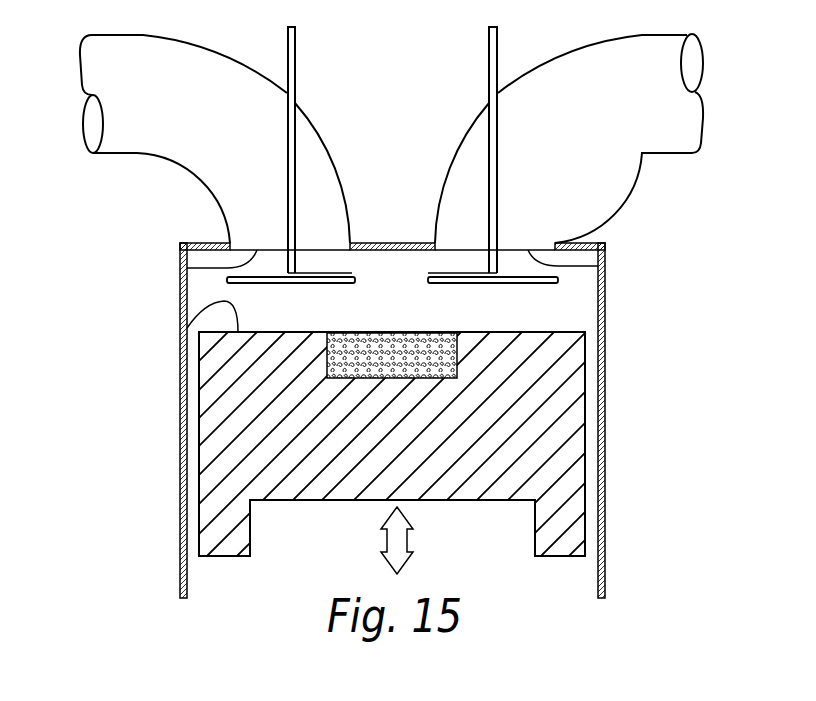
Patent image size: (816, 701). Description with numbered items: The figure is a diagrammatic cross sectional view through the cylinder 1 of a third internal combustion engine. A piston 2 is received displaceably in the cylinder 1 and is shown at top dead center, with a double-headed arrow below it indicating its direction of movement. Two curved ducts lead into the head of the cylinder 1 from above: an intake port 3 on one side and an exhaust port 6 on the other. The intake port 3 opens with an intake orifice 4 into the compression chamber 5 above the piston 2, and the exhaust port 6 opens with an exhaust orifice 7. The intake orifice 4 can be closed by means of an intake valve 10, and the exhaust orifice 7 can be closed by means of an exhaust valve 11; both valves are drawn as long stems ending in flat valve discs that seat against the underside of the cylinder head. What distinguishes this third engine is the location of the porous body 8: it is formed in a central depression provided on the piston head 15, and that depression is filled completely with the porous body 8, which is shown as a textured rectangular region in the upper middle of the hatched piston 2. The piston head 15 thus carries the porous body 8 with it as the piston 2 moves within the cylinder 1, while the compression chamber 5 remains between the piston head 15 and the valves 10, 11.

The cylinder 1 is at (605, 507).
The piston 2 is at (553, 460).
The intake port 3 is at (133, 154).
The intake orifice 4 is at (184, 267).
The compression chamber 5 is at (533, 312).
The exhaust port 6 is at (668, 154).
The exhaust orifice 7 is at (597, 267).
The porous body 8 is at (385, 362).
The intake valve 10 is at (296, 88).
The exhaust valve 11 is at (488, 88).
The piston head 15 is at (187, 328).